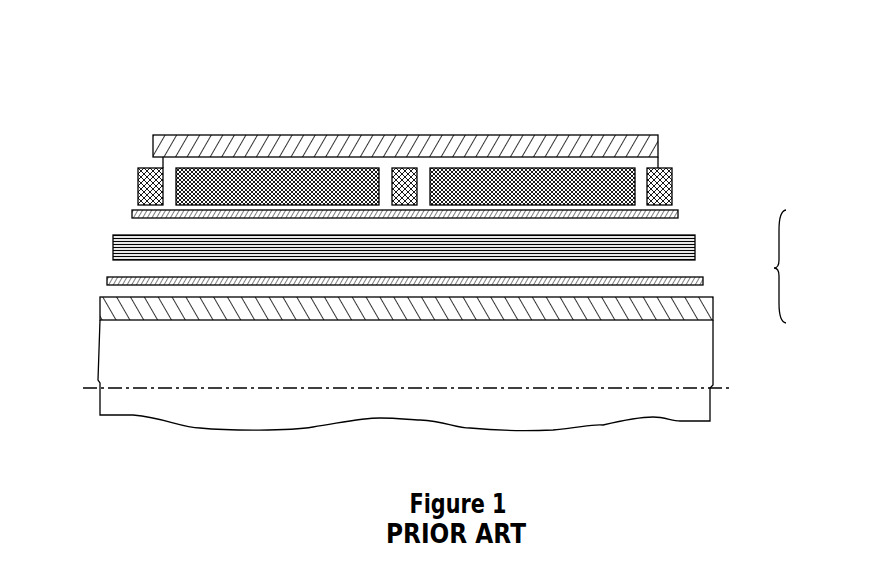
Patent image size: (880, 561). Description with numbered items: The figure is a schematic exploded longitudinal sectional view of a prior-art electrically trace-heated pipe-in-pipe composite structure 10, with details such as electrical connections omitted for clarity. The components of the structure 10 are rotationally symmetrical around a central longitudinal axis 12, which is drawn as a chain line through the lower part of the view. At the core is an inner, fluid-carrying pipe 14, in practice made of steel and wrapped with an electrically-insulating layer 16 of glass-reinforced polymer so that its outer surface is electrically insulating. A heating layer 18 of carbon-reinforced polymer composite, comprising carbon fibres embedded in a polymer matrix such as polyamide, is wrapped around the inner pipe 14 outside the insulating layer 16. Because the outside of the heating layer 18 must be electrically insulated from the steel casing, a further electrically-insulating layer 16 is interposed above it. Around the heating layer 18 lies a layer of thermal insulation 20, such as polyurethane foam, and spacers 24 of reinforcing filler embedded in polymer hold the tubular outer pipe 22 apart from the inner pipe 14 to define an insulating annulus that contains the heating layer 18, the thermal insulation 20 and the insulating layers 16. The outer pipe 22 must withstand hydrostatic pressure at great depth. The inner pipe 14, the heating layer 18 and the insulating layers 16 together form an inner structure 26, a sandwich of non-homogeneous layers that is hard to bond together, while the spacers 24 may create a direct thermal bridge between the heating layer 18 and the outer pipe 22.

The composite structure 10 is at (122, 64).
The central longitudinal axis 12 is at (567, 388).
The inner pipe 14 is at (102, 307).
The electrically-insulating layer 16 is at (135, 226).
The heating layer 18 is at (695, 243).
The thermal insulation layer 20 is at (272, 177).
The outer pipe 22 is at (467, 135).
The spacers 24 is at (138, 172).
The inner structure 26 is at (799, 266).